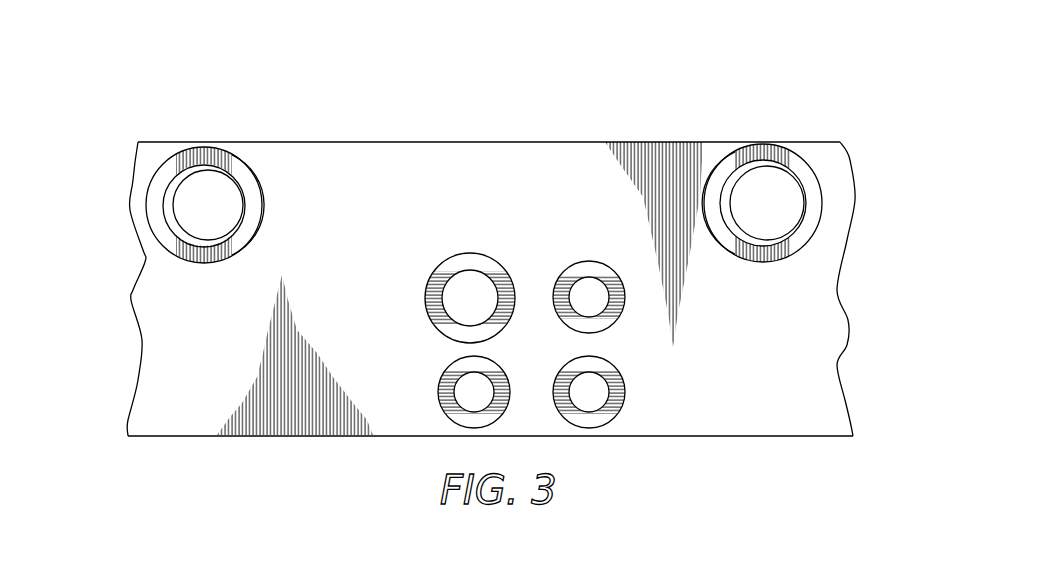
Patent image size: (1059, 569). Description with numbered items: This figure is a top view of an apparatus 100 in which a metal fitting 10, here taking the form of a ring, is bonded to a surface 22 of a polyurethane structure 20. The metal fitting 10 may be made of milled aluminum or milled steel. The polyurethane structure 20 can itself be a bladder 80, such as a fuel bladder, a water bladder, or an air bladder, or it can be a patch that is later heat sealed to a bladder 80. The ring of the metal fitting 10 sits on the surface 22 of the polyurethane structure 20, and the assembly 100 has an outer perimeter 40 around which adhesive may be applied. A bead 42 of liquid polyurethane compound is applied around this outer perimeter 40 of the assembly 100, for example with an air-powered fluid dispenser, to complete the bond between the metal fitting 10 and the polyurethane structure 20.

The apparatus 100 is at (462, 260).
The metal fitting 10 is at (211, 207).
The polyurethane structure 20 is at (462, 289).
The surface 22 is at (167, 269).
The outer perimeter 40 is at (202, 260).
The bead 42 is at (263, 207).
The bladder 80 is at (365, 392).